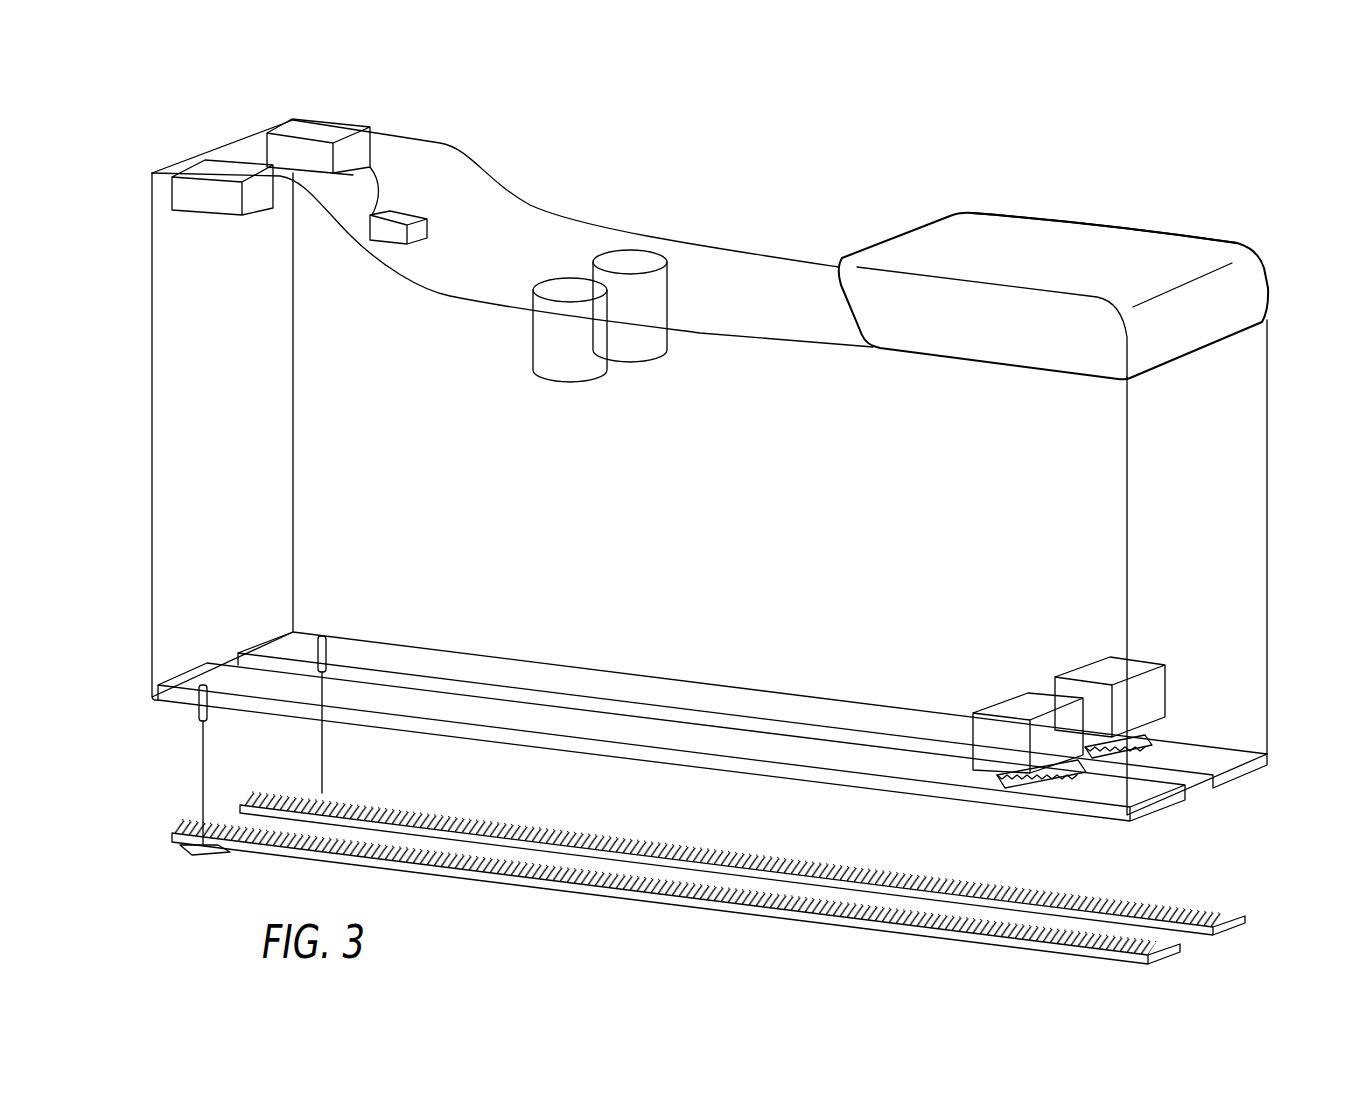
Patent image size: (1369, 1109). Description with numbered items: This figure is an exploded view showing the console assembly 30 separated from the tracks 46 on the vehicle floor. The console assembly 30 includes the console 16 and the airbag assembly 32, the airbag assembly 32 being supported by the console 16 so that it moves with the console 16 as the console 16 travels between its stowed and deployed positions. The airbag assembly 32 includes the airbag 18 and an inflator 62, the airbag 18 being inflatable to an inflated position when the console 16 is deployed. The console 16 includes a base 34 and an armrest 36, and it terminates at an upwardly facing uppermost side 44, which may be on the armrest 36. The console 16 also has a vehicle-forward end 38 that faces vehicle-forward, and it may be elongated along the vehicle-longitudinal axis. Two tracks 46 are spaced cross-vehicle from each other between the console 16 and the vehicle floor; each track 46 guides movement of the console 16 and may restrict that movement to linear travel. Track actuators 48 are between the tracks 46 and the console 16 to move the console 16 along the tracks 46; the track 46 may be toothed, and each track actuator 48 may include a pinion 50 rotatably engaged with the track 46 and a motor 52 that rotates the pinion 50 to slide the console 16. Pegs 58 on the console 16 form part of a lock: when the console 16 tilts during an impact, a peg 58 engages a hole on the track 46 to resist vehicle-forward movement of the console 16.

The console 16 is at (735, 245).
The airbag 18 is at (222, 152).
The console assembly 30 is at (832, 200).
The airbag assembly 32 is at (396, 176).
The base 34 is at (1036, 457).
The armrest 36 is at (1155, 232).
The vehicle-forward end 38 is at (150, 257).
The uppermost side 44 is at (1009, 194).
The track 46 is at (1165, 955).
The track actuator 48 is at (1091, 655).
The pinion 50 is at (1057, 790).
The motor 52 is at (1073, 670).
The peg 58 is at (322, 636).
The inflator 62 is at (412, 215).